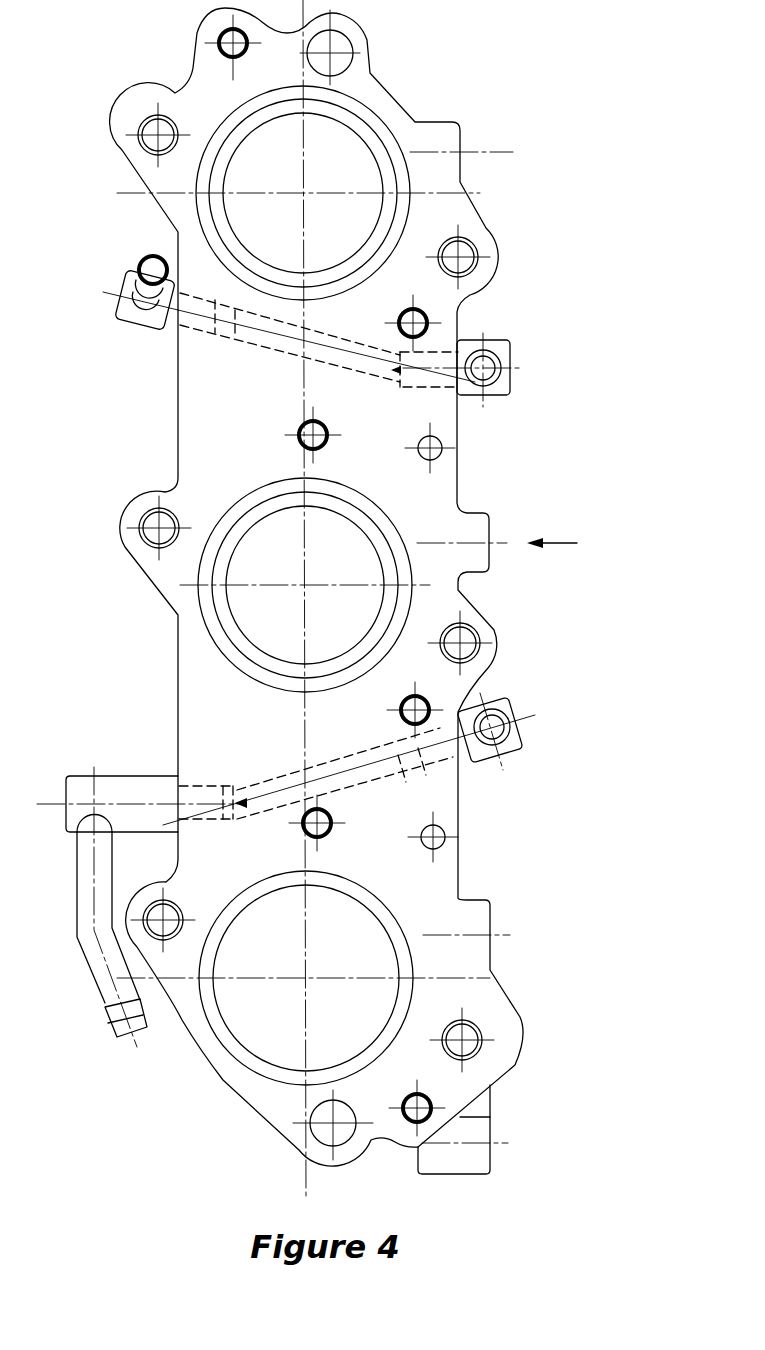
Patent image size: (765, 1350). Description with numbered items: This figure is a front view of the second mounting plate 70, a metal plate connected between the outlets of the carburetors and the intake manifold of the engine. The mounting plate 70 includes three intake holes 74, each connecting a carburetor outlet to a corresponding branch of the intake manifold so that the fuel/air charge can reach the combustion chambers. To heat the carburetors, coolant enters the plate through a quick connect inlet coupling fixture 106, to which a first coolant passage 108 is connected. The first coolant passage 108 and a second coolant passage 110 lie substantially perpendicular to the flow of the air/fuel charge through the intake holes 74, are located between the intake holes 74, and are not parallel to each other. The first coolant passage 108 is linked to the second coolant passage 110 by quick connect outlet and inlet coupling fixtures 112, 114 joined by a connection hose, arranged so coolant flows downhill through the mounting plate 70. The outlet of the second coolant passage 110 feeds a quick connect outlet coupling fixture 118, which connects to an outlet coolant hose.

The second mounting plate 70 is at (397, 92).
The intake holes 74 is at (345, 258).
The quick connect inlet coupling fixture 106 is at (153, 253).
The first coolant passage 108 is at (283, 352).
The second coolant passage 110 is at (363, 780).
The quick connect outlet coupling fixture 112 is at (508, 340).
The quick connect inlet coupling fixture 114 is at (518, 713).
The quick connect outlet coupling fixture 118 is at (120, 777).